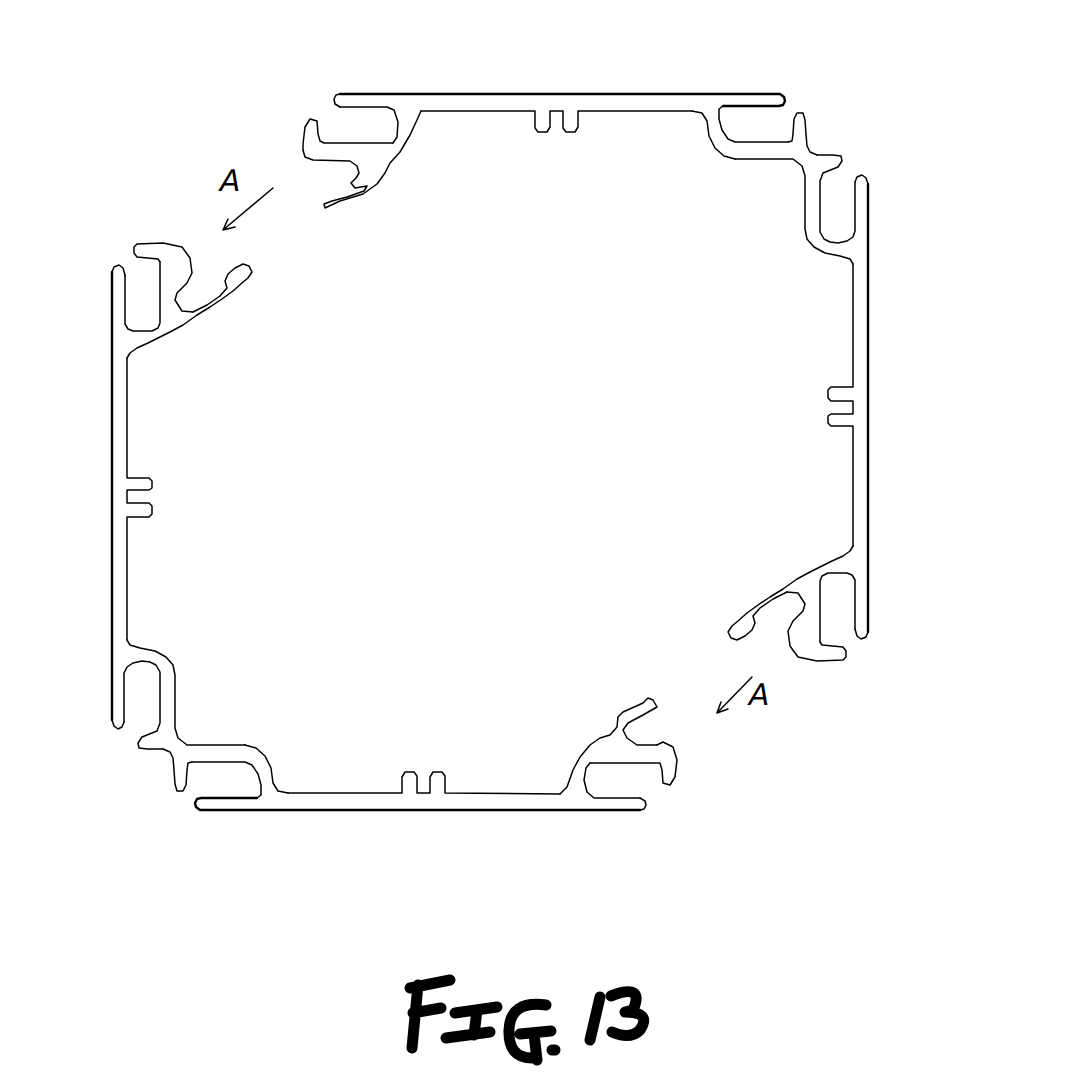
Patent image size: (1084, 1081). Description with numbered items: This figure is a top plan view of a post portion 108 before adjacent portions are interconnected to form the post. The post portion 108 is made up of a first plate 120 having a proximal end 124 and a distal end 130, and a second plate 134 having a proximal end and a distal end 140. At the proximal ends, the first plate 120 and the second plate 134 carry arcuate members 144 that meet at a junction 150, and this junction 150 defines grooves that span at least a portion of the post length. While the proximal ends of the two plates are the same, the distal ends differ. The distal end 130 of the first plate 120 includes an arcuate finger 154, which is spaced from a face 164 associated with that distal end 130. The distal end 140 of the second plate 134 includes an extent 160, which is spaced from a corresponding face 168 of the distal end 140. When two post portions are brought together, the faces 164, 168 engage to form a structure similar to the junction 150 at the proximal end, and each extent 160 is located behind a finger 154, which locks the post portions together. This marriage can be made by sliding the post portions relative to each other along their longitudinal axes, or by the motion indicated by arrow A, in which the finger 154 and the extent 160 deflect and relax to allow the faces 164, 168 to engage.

The post portion 108 is at (216, 524).
The first plate 120 is at (112, 578).
The proximal end 124 is at (112, 721).
The distal end 130 is at (112, 262).
The second plate 134 is at (605, 95).
The distal end 140 is at (642, 813).
The arcuate member 144 is at (168, 688).
The junction 150 is at (183, 743).
The arcuate finger 154 is at (250, 272).
The extent 160 is at (338, 198).
The face 164 is at (187, 250).
The face 168 is at (303, 160).